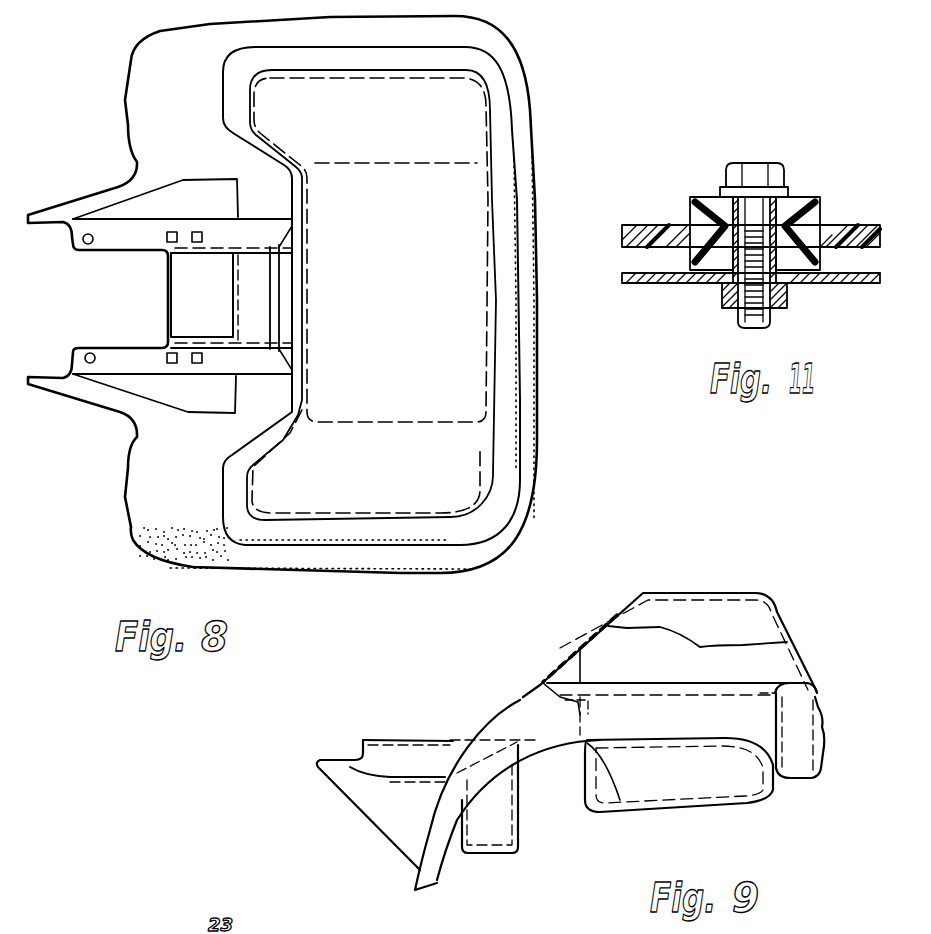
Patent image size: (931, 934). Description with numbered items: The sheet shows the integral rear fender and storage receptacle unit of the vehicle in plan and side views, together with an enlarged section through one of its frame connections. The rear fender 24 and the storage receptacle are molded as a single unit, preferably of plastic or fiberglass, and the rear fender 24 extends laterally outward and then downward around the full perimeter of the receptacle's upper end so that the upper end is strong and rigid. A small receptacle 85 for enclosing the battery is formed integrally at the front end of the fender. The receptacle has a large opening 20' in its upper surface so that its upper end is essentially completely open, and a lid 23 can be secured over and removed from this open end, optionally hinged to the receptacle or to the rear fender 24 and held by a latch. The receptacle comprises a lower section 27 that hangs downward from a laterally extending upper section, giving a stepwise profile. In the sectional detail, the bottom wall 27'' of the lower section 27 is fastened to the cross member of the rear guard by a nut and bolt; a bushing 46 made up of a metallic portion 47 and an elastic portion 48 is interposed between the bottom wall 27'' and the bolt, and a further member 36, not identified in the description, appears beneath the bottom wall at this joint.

In FIG. 8, the rear fender 24 is at (528, 88).
In FIG. 9, the rear fender 24 is at (825, 740).
In FIG. 8, the small receptacle 85 is at (197, 293).
In FIG. 9, the small receptacle 85 is at (520, 823).
In FIG. 9, the lid 23 is at (697, 598).
In FIG. 11, the bottom wall 27'' is at (751, 205).
In FIG. 9, the bottom wall 27'' is at (507, 758).
In FIG. 9, the lower section 27 is at (679, 793).
In FIG. 9, the opening 20' is at (819, 704).
In FIG. 11, the bushing 46 is at (827, 212).
In FIG. 11, the metallic portion 47 is at (800, 200).
In FIG. 11, the elastic portion 48 is at (686, 197).
In FIG. 11, the base plate 36 is at (665, 284).